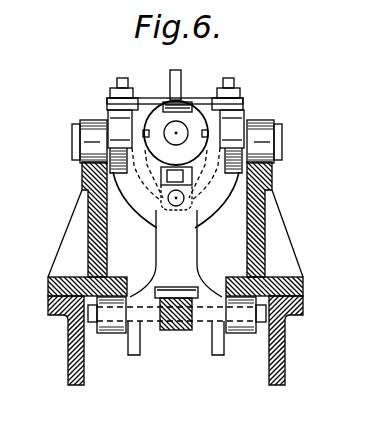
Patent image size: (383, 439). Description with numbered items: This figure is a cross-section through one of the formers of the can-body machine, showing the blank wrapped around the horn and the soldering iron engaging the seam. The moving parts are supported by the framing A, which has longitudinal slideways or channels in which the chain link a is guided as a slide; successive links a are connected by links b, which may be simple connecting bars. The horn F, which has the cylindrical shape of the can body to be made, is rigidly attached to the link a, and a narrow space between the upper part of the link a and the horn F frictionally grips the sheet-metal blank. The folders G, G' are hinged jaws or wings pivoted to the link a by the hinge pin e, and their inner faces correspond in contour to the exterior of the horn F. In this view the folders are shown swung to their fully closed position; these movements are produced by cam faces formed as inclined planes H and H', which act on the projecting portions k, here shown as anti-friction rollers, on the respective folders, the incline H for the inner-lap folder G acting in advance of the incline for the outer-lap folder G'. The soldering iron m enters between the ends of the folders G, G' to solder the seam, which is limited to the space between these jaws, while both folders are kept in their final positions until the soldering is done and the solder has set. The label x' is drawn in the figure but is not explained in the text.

The soldering iron m is at (170, 81).
The horn F is at (190, 124).
The projecting portions k is at (262, 141).
The cam incline H is at (131, 229).
The cam incline H' is at (235, 229).
The clamp block x' is at (176, 154).
The folder G is at (137, 191).
The folder G' is at (214, 191).
The hinge pin e is at (170, 205).
The chain link a is at (174, 270).
The connecting link b is at (175, 327).
The framing A is at (274, 340).